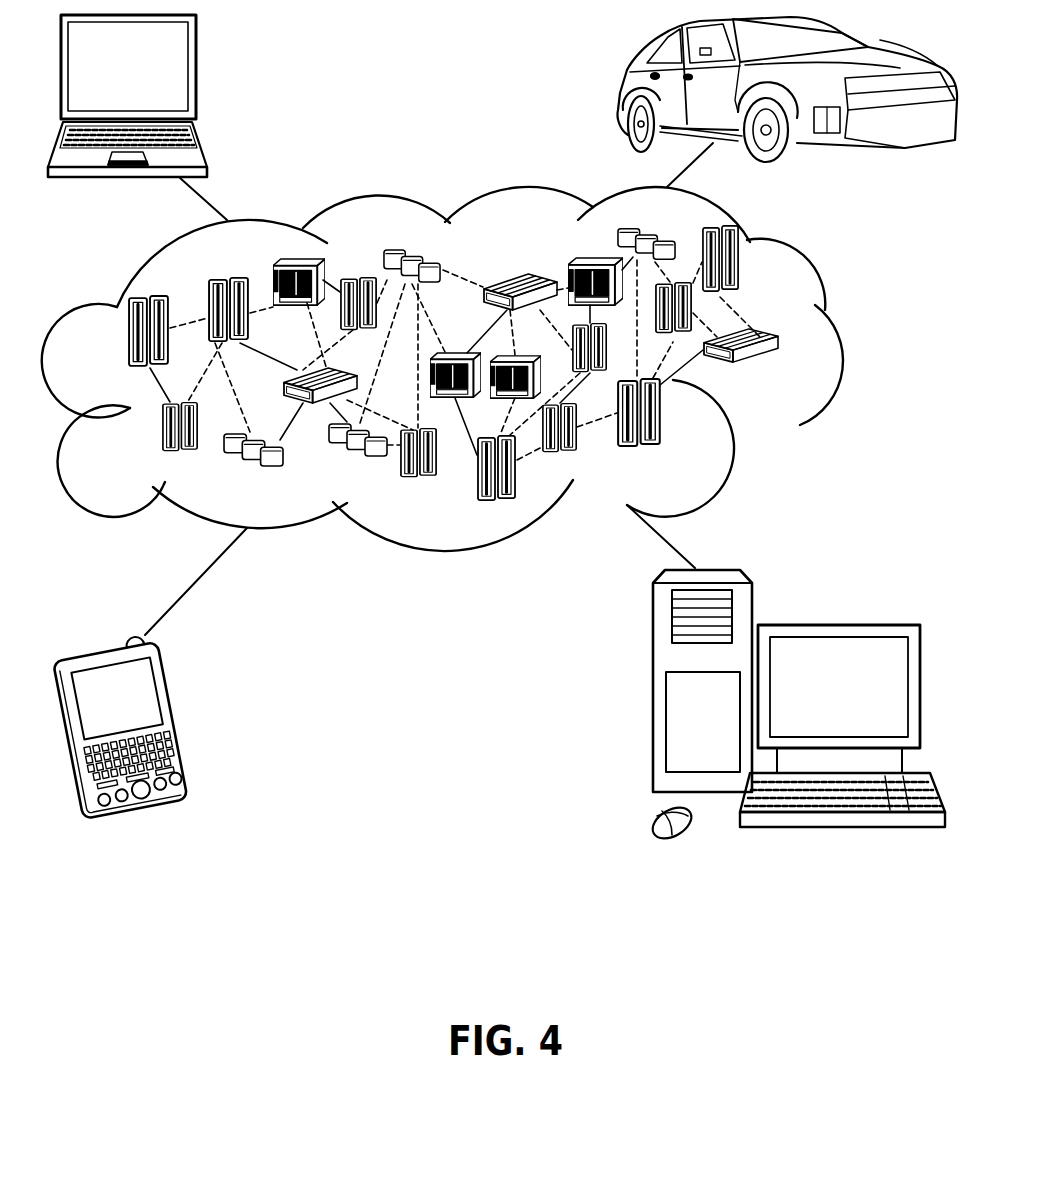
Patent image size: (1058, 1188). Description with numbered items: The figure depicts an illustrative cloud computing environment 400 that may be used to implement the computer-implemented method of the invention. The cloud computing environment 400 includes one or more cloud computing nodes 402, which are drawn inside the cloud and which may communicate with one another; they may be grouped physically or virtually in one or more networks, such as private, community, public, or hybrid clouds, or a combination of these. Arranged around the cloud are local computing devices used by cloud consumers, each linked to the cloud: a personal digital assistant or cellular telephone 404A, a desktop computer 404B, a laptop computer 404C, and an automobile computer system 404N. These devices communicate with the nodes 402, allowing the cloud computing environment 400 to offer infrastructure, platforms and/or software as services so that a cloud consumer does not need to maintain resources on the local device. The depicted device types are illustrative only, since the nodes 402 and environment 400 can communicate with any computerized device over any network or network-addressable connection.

The cloud computing environment 400 is at (836, 342).
The cloud computing nodes 402 is at (790, 380).
The personal digital assistant (PDA) or cellular telephone 404A is at (183, 717).
The desktop computer 404B is at (837, 623).
The laptop computer 404C is at (196, 73).
The automobile computer system 404N is at (622, 88).